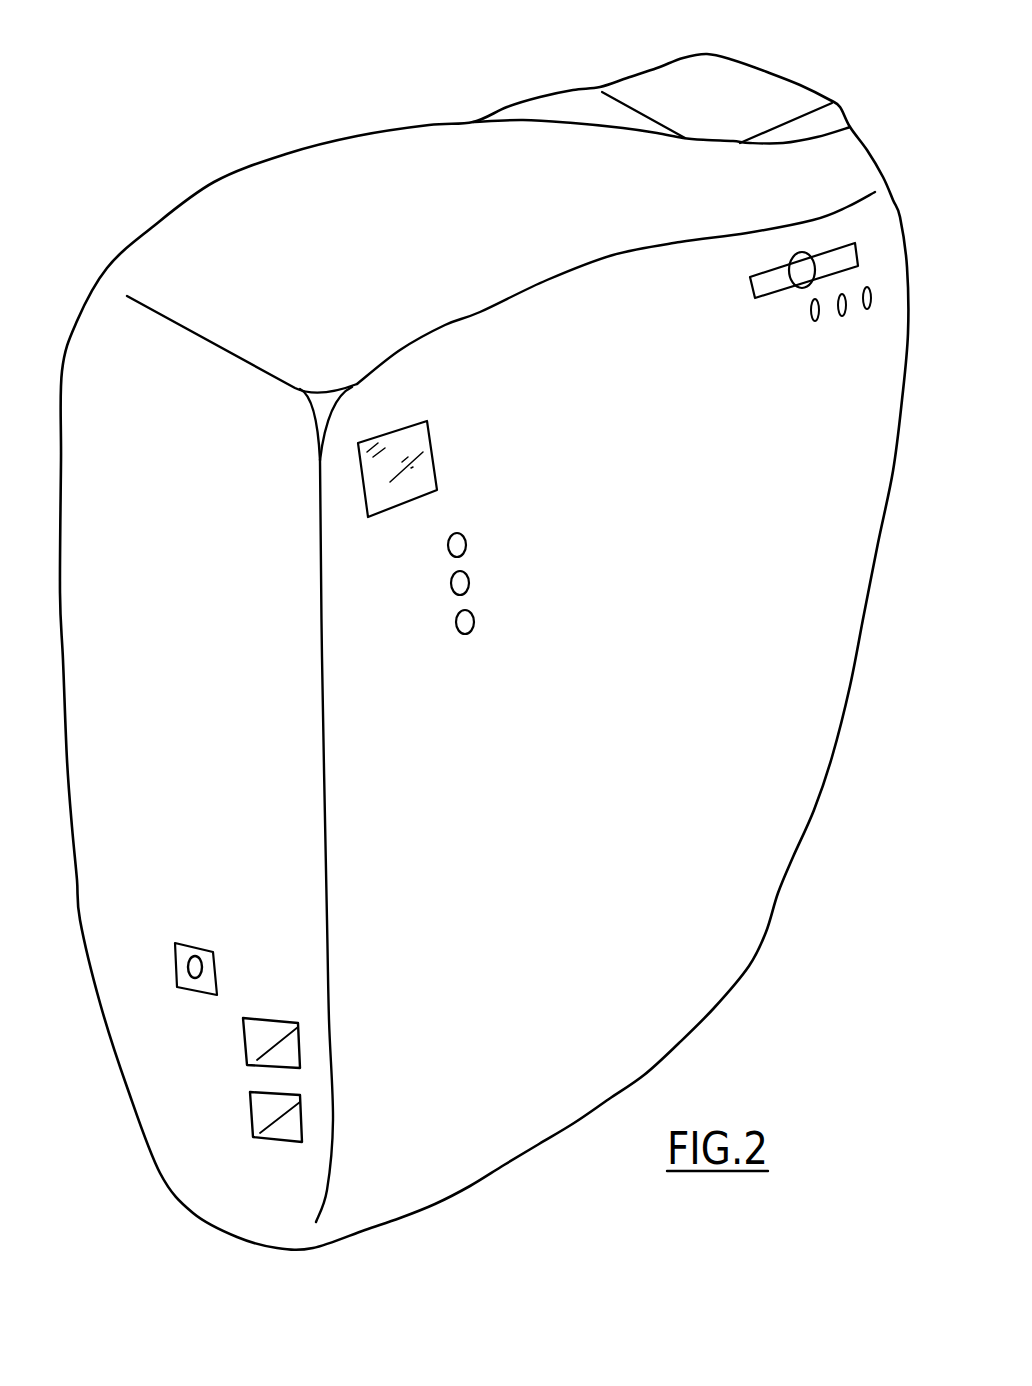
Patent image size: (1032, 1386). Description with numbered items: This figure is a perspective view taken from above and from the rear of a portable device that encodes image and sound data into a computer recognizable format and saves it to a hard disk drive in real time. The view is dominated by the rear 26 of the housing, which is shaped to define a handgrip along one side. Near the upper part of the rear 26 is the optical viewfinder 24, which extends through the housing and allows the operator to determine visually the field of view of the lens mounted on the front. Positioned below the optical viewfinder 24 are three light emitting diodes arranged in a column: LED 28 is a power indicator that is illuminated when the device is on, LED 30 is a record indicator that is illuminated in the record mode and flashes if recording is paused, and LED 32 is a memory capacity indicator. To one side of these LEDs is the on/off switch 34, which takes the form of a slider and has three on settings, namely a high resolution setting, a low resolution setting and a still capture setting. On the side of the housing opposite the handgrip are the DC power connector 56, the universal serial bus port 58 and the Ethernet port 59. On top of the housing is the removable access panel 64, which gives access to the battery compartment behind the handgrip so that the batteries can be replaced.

The optical viewfinder 24 is at (432, 445).
The rear 26 is at (800, 634).
The LED 28 is at (465, 540).
The LED 30 is at (468, 580).
The LED 32 is at (475, 623).
The on/off switch 34 is at (800, 290).
The DC power connector 56 is at (202, 970).
The universal serial bus (USB) port 58 is at (247, 1050).
The Ethernet port 59 is at (253, 1122).
The removable access panel 64 is at (770, 86).